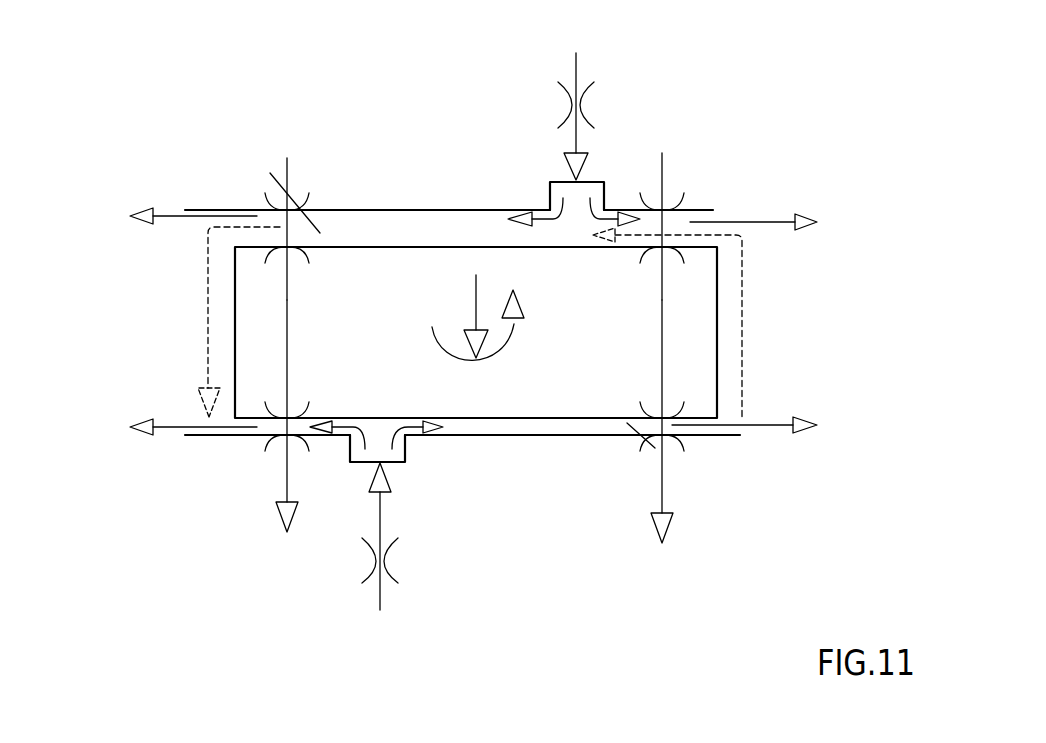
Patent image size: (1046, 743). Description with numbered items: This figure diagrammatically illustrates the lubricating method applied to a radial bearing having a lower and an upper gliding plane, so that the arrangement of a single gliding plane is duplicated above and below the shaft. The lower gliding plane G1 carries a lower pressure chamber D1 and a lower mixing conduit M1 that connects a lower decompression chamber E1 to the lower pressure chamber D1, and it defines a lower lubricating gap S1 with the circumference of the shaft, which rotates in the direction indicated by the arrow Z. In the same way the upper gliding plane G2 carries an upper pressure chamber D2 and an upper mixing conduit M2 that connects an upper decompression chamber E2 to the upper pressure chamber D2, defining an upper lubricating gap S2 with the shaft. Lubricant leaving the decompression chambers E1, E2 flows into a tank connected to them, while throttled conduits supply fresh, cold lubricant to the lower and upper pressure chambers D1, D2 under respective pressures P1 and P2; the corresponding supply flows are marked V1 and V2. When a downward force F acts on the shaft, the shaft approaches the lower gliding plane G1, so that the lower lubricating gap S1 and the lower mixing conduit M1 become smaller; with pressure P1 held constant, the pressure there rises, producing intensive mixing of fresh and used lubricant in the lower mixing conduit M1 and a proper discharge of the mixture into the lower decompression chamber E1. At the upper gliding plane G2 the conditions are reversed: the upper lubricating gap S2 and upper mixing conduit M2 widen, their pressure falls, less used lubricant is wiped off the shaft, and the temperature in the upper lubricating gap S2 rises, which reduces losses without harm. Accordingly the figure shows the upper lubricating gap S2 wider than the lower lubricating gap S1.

The lower decompression chamber E1 is at (204, 321).
The upper decompression chamber E2 is at (708, 323).
The lower lubricating gap S1 is at (568, 425).
The upper lubricating gap S2 is at (385, 223).
The lower gliding plane G1 is at (665, 455).
The upper gliding plane G2 is at (283, 223).
The lower mixing conduit M1 is at (265, 430).
The upper mixing conduit M2 is at (683, 227).
The lower pressure chamber D1 is at (385, 450).
The upper pressure chamber D2 is at (585, 193).
The pressure P1 is at (365, 555).
The pressure P2 is at (560, 106).
The volume flow V1 is at (391, 593).
The volume flow V2 is at (585, 78).
The downward force F is at (468, 313).
The arrow indicating direction of rotation Z is at (484, 331).